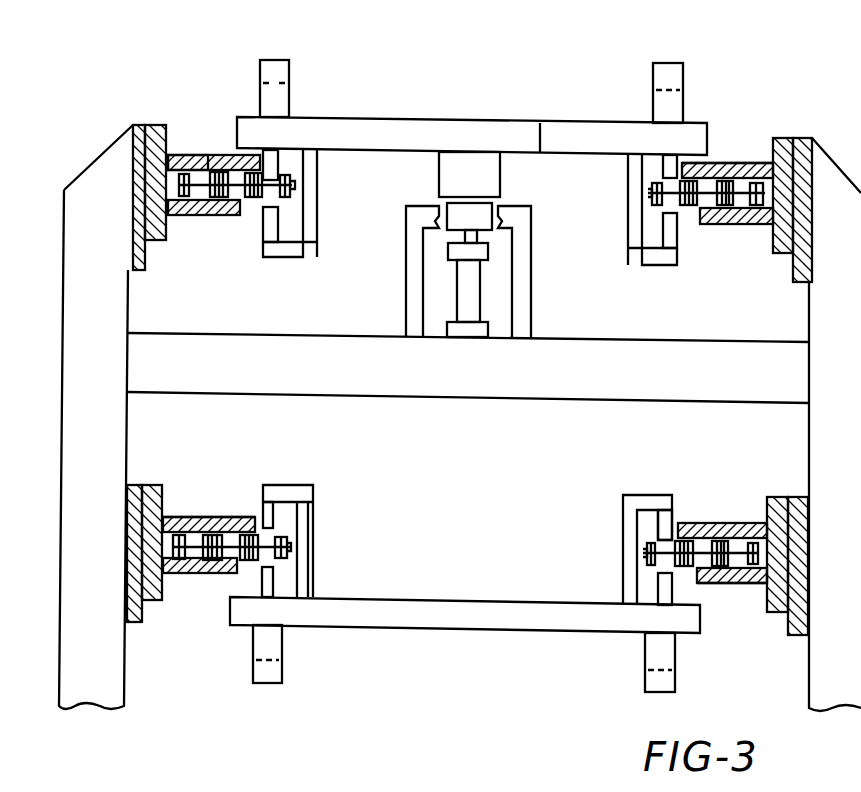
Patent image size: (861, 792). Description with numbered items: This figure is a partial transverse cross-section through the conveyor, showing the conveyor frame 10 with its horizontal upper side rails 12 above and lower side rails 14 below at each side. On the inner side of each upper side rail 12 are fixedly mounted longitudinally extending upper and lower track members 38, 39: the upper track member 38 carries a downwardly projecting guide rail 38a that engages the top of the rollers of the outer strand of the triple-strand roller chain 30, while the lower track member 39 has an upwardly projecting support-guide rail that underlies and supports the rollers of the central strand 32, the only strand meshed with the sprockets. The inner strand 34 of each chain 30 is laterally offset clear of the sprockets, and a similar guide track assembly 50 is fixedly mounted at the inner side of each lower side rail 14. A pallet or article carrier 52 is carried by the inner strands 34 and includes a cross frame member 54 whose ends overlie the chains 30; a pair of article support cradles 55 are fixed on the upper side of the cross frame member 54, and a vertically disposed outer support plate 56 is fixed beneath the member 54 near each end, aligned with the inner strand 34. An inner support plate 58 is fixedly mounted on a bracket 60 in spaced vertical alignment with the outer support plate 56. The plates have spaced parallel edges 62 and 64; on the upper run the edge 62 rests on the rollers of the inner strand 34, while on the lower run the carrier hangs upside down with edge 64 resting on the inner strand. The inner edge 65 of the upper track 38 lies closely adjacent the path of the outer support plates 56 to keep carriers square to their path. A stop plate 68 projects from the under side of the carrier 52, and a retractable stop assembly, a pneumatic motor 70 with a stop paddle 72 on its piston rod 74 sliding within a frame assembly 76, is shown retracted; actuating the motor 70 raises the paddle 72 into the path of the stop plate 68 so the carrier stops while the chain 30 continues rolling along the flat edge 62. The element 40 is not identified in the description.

The conveyor frame 10 is at (60, 232).
The upper side rail 12 is at (147, 125).
The lower side rail 14 is at (164, 484).
The triple-strand roller chain 30 is at (700, 165).
The central strand 32 is at (228, 198).
The inner strand 34 is at (255, 198).
The upper track member 38 is at (212, 155).
The guide rail 38a is at (197, 155).
The lower track member 39 is at (183, 216).
The threaded bolt 40 is at (178, 186).
The guide track assembly 50 is at (266, 452).
The pallet or article carrier 52 is at (522, 94).
The cross frame member 54 is at (541, 148).
The article support cradle 55 is at (260, 88).
The outer support plate 56 is at (272, 170).
The inner support plate 58 is at (268, 240).
The bracket 60 is at (317, 211).
The edge of outer support plate 62 is at (290, 176).
The edge of inner support plate 64 is at (277, 212).
The inner edge of upper track 65 is at (268, 150).
The stop plate 68 is at (440, 174).
The pneumatic motor 70 is at (480, 274).
The stop paddle 72 is at (481, 226).
The piston rod 74 is at (465, 236).
The frame assembly 76 is at (406, 290).